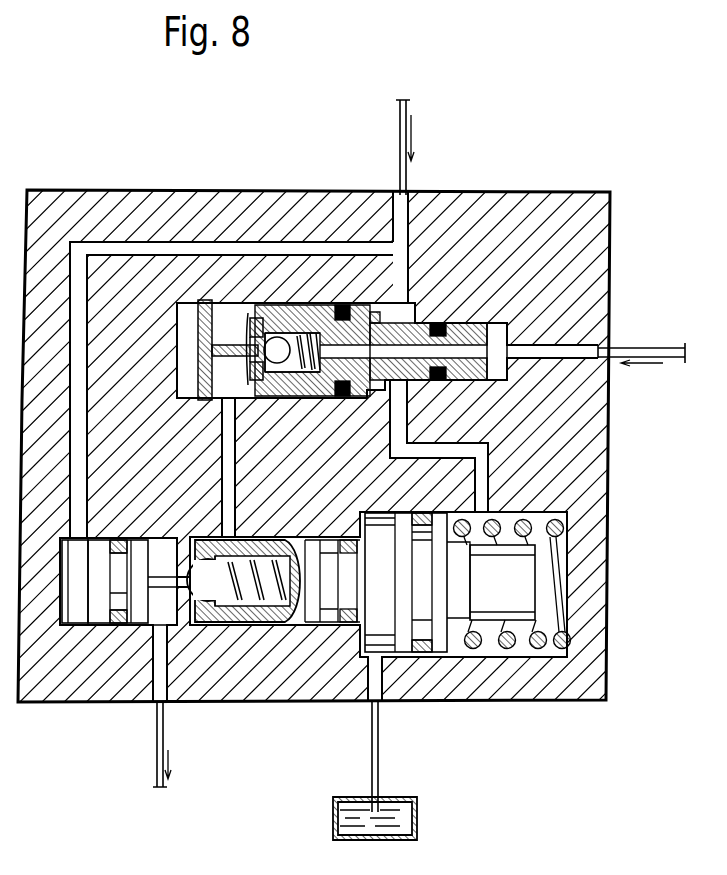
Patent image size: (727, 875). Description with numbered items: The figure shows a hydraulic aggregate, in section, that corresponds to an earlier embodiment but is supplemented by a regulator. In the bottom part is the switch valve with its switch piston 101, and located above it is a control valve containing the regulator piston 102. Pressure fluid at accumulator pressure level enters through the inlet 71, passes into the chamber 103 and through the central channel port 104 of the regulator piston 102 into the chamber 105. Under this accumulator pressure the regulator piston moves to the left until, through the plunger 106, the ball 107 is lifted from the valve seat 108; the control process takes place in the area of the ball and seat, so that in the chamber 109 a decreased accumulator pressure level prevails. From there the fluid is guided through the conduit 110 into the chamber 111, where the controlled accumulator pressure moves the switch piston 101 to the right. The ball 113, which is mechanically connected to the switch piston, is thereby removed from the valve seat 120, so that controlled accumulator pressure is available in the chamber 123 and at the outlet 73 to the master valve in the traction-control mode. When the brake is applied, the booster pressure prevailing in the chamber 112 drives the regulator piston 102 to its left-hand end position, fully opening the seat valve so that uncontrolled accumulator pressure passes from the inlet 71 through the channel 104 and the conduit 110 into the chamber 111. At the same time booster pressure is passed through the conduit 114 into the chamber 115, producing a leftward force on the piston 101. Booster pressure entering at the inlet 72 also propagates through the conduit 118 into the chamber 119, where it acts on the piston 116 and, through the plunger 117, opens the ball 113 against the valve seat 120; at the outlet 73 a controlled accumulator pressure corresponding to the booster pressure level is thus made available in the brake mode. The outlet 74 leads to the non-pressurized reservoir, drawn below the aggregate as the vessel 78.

The inlet 71 is at (600, 352).
The inlet 72 is at (398, 300).
The outlet 73 is at (152, 744).
The outlet 74 is at (387, 757).
The reservoir 78 is at (418, 825).
The switch piston 101 is at (495, 600).
The regulator piston 102 is at (475, 330).
The chamber 103 is at (497, 330).
The central channel port 104 is at (352, 322).
The chamber 105 is at (305, 338).
The plunger 106 is at (248, 328).
The ball 107 is at (277, 336).
The valve seat 108 is at (268, 338).
The chamber 109 is at (207, 310).
The conduit 110 is at (228, 458).
The chamber 111 is at (265, 622).
The chamber 112 is at (437, 318).
The ball 113 is at (330, 625).
The conduit 114 is at (395, 452).
The chamber 115 is at (522, 645).
The piston 116 is at (98, 625).
The plunger 117 is at (207, 600).
The conduit 118 is at (115, 247).
The chamber 119 is at (62, 605).
The valve seat 120 is at (252, 604).
The chamber 123 is at (160, 625).